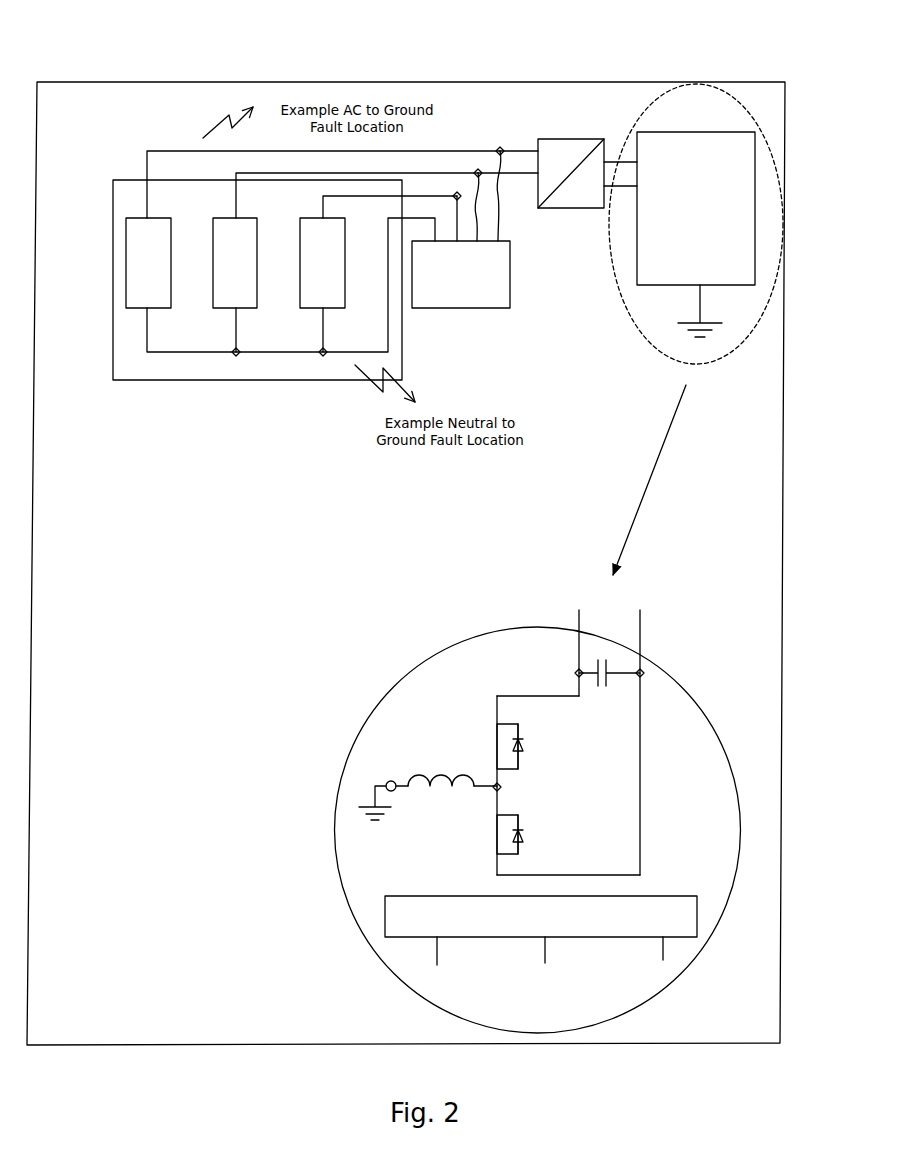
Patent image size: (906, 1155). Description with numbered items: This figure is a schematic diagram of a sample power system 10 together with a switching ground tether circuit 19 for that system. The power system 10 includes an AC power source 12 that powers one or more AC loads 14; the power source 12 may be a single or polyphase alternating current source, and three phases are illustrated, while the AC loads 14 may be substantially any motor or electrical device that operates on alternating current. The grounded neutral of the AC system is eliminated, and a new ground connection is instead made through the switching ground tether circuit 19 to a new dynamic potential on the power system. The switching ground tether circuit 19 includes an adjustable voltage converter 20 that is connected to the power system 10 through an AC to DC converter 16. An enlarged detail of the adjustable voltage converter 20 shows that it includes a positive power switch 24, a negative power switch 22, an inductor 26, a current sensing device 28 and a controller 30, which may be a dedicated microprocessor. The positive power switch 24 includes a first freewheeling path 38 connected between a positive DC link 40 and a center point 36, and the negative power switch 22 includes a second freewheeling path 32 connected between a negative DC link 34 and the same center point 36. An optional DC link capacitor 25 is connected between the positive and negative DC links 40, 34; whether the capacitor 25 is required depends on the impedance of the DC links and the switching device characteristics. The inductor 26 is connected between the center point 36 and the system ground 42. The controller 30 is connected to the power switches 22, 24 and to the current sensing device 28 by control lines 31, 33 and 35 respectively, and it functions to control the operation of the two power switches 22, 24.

The power system 10 is at (128, 413).
The AC power source 12 is at (165, 127).
The AC loads 14 is at (485, 300).
The AC to DC converter 16 is at (563, 140).
The switching ground tether circuit 19 is at (735, 80).
The adjustable voltage converter 20 is at (748, 218).
The negative power switch 22 is at (490, 835).
The positive power switch 24 is at (495, 750).
The DC link capacitor 25 is at (607, 668).
The inductor 26 is at (439, 783).
The current sensing device 28 is at (391, 780).
The controller 30 is at (665, 895).
The control line 31 is at (437, 950).
The second freewheeling path 32 is at (520, 826).
The control line 33 is at (545, 955).
The negative DC link 34 is at (545, 875).
The control line 35 is at (663, 950).
The center point 36 is at (500, 790).
The first freewheeling path 38 is at (520, 733).
The positive DC link 40 is at (527, 696).
The system ground 42 is at (368, 812).